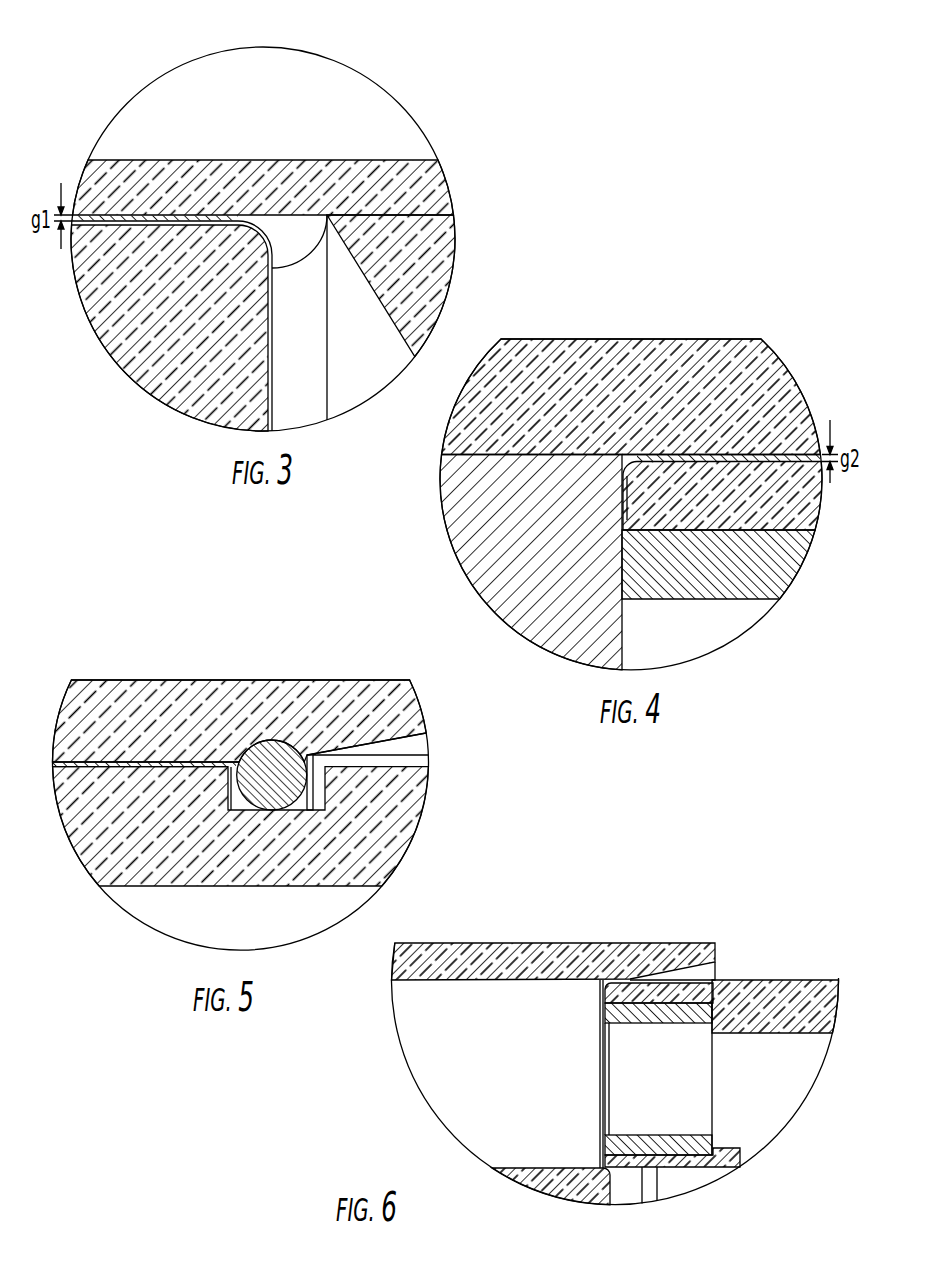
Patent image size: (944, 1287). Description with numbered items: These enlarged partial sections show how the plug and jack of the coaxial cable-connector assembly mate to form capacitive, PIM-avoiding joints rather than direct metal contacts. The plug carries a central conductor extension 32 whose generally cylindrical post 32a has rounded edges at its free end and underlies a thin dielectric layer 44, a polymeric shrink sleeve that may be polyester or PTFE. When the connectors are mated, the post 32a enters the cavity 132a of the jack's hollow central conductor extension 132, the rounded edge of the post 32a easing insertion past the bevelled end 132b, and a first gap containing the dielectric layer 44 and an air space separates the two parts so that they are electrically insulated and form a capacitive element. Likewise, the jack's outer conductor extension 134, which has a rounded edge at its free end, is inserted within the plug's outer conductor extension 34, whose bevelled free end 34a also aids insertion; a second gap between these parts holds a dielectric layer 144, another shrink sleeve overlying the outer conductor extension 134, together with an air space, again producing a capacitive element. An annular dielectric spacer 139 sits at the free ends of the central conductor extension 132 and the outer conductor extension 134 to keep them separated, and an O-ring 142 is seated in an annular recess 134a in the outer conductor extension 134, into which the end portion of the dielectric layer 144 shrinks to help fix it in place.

In FIG. 6, the central conductor extension 32 is at (498, 1188).
In FIG. 3, the post 32a is at (119, 344).
In FIG. 6, the post 32a is at (562, 1195).
In FIG. 5, the outer conductor extension 34 is at (205, 702).
In FIG. 6, the outer conductor extension 34 is at (533, 945).
In FIG. 5, the free end 34a is at (412, 710).
In FIG. 6, the free end 34a is at (680, 943).
In FIG. 3, the dielectric layer 44 is at (350, 206).
In FIG. 3, the central conductor extension 132 is at (253, 175).
In FIG. 6, the central conductor extension 132 is at (743, 1153).
In FIG. 3, the cavity 132a is at (306, 383).
In FIG. 6, the cavity 132a is at (713, 1172).
In FIG. 6, the bevelled end 132b is at (625, 1170).
In FIG. 4, the outer conductor extension 134 is at (815, 509).
In FIG. 5, the outer conductor extension 134 is at (294, 887).
In FIG. 5, the annular recess 134a is at (318, 812).
In FIG. 4, the annular dielectric spacer 139 is at (788, 581).
In FIG. 5, the O-ring 142 is at (225, 806).
In FIG. 4, the dielectric layer 144 is at (633, 454).
In FIG. 5, the dielectric layer 144 is at (116, 768).